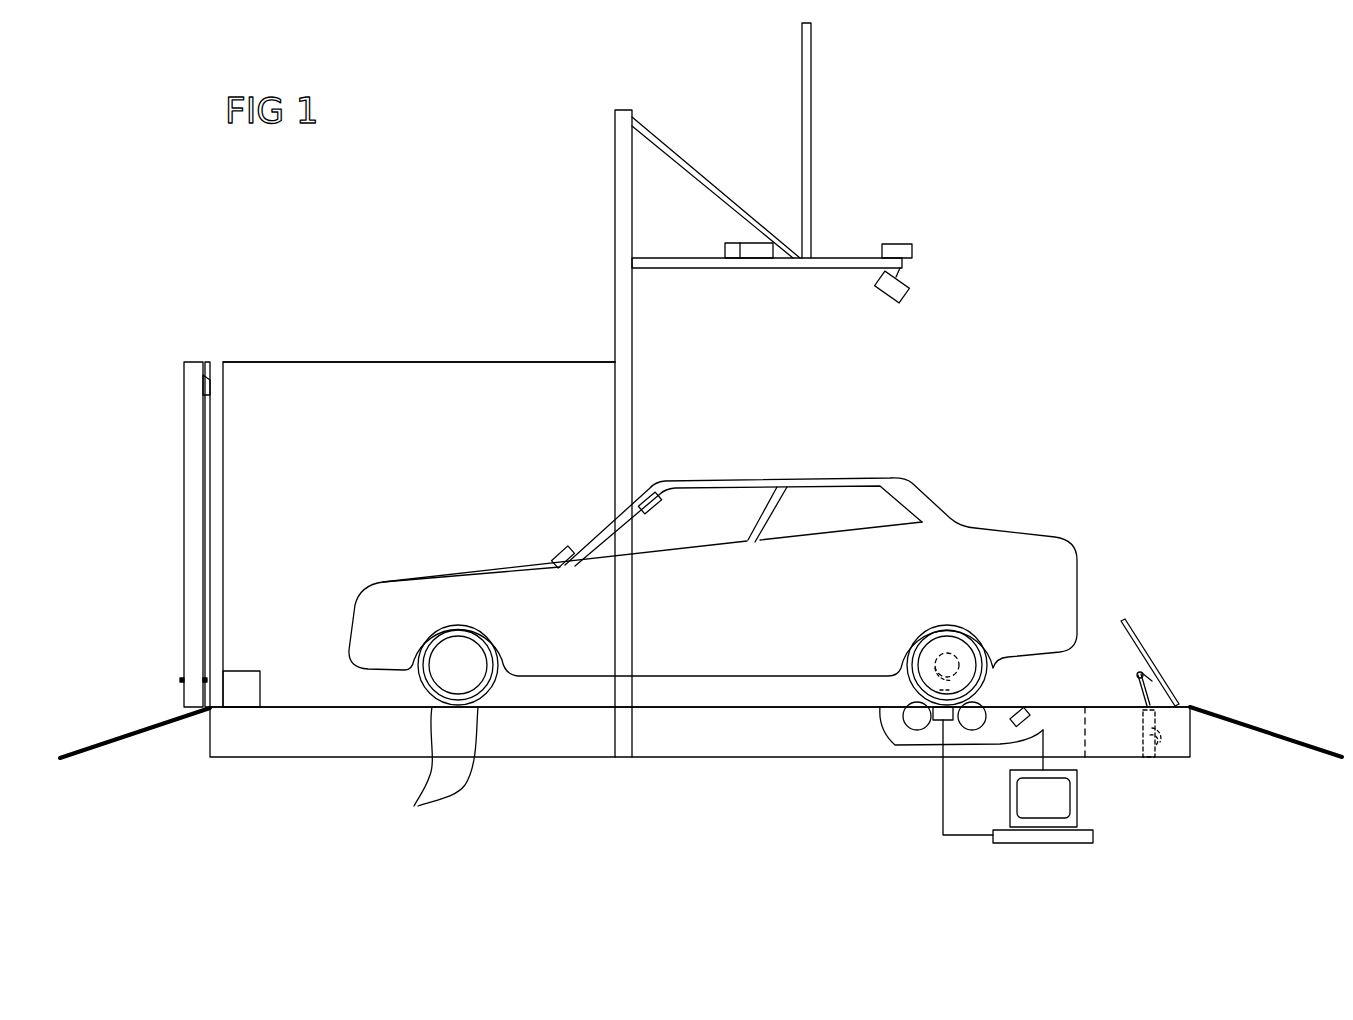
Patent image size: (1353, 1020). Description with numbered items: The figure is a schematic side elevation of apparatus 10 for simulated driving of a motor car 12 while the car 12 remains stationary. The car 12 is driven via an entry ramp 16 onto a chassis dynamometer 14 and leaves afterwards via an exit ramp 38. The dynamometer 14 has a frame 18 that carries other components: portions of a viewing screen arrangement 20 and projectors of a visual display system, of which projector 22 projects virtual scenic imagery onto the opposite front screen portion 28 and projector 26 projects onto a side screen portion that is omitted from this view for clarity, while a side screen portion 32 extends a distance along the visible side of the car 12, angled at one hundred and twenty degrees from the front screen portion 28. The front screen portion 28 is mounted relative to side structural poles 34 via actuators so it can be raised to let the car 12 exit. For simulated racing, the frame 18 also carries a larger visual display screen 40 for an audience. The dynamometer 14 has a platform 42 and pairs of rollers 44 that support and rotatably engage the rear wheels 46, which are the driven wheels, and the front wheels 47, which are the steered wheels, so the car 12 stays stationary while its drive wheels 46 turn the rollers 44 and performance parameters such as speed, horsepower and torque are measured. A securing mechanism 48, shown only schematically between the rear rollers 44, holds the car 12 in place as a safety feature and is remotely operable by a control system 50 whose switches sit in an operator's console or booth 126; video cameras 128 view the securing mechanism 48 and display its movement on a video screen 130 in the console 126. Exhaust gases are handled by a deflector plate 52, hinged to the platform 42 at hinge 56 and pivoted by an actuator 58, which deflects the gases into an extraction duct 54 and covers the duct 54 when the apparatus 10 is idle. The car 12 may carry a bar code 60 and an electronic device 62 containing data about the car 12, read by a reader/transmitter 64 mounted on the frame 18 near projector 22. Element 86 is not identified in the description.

The apparatus 10 is at (1062, 208).
The motor car 12 is at (1008, 529).
The chassis dynamometer 14 is at (580, 731).
The entry ramp 16 is at (1290, 735).
The frame 18 is at (627, 305).
The viewing screen arrangement 20 is at (324, 341).
The projector 22 is at (893, 244).
The projector 26 is at (748, 252).
The front screen portion 28 is at (225, 455).
The side screen portion 32 is at (484, 390).
The side structural pole 34 is at (184, 512).
The exit ramp 38 is at (132, 725).
The visual display screen 40 is at (812, 100).
The platform 42 is at (758, 706).
The pairs of rollers 44 is at (917, 730).
The rear wheels 46 is at (945, 630).
The front wheels 47 is at (425, 683).
The securing mechanism 48 is at (924, 714).
The control system 50 is at (918, 828).
The deflector plate 52 is at (1145, 640).
The extraction duct 54 is at (1173, 722).
The hinge 56 is at (1176, 703).
The actuator 58 is at (1168, 745).
The bar code 60 is at (560, 552).
The electronic device 62 is at (660, 505).
The reader/transmitter 64 is at (905, 295).
The door sensor 86 is at (250, 668).
The operator's console or booth 126 is at (1002, 836).
The video camera 128 is at (1022, 707).
The video screen 130 is at (1058, 797).